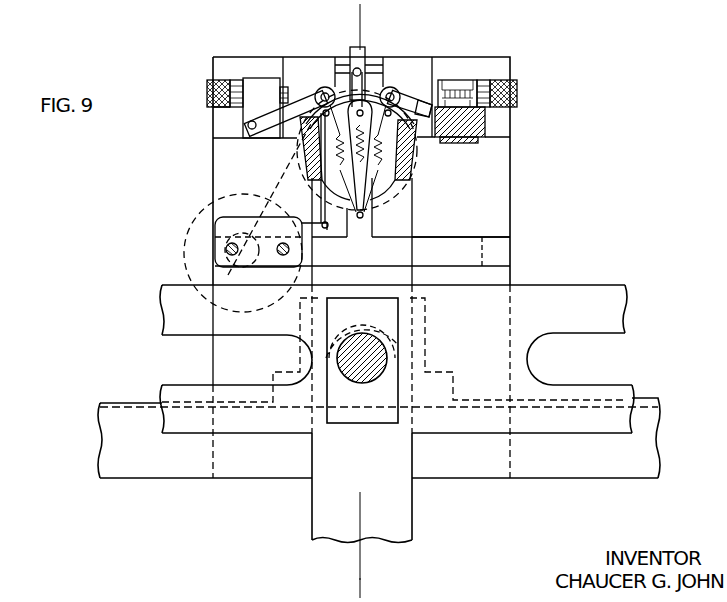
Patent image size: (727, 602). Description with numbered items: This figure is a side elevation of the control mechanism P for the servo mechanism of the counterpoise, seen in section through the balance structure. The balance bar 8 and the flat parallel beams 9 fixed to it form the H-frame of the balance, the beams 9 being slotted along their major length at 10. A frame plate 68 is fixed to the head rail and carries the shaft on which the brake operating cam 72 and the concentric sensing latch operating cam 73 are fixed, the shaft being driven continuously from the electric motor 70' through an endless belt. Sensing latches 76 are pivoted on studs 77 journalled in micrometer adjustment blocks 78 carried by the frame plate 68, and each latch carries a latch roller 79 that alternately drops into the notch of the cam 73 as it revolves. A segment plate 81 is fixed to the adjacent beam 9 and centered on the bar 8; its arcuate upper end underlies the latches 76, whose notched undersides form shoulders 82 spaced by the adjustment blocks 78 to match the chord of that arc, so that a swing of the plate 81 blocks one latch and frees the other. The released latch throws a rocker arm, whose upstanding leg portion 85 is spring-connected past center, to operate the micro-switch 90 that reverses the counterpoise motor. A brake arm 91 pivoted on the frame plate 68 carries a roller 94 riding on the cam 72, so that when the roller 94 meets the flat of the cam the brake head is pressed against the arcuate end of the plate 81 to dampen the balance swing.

The balance bar 8 is at (378, 348).
The flat parallel beams 9 is at (547, 294).
The slot 10 is at (372, 15).
The frame plate 68 is at (510, 190).
The electric motor 70' is at (224, 253).
The brake operating cam 72 is at (412, 160).
The sensing latch operating cam 73 is at (383, 190).
The sensing latches 76 is at (245, 135).
The studs 77 is at (243, 125).
The micrometer adjustment blocks 78 is at (258, 86).
The latch rollers 79 is at (324, 95).
The segment plate 81 is at (403, 506).
The shoulders 82 is at (468, 243).
The upstanding leg portion 85 is at (356, 69).
The single pole double-throw micro-switch 90 is at (218, 224).
The brake arm 91 is at (365, 55).
The roller 94 is at (380, 92).
The control mechanism P is at (513, 153).